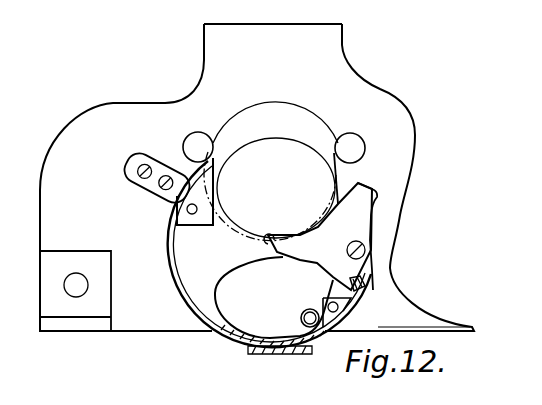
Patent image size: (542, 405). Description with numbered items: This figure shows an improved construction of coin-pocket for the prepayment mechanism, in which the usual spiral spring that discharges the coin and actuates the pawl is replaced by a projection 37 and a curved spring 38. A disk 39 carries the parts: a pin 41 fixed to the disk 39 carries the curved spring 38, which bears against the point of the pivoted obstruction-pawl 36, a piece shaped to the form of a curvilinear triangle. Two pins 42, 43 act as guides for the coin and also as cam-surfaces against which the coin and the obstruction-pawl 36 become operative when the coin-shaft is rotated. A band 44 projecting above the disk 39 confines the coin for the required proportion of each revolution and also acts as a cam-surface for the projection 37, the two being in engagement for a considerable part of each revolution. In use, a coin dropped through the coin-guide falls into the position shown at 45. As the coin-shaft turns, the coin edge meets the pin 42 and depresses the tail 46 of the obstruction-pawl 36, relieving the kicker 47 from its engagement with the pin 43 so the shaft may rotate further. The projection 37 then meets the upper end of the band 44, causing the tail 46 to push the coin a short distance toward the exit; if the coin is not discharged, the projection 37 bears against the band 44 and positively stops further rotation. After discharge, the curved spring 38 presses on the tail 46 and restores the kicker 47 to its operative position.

The obstruction-pawl 36 is at (320, 236).
The projection 37 is at (364, 287).
The curved spring 38 is at (236, 275).
The disk 39 is at (321, 148).
The pin 41 is at (302, 318).
The pin 42 is at (200, 137).
The pin 43 is at (365, 156).
The band 44 is at (166, 239).
The coin position 45 is at (287, 156).
The tail 46 is at (279, 237).
The kicker 47 is at (379, 207).